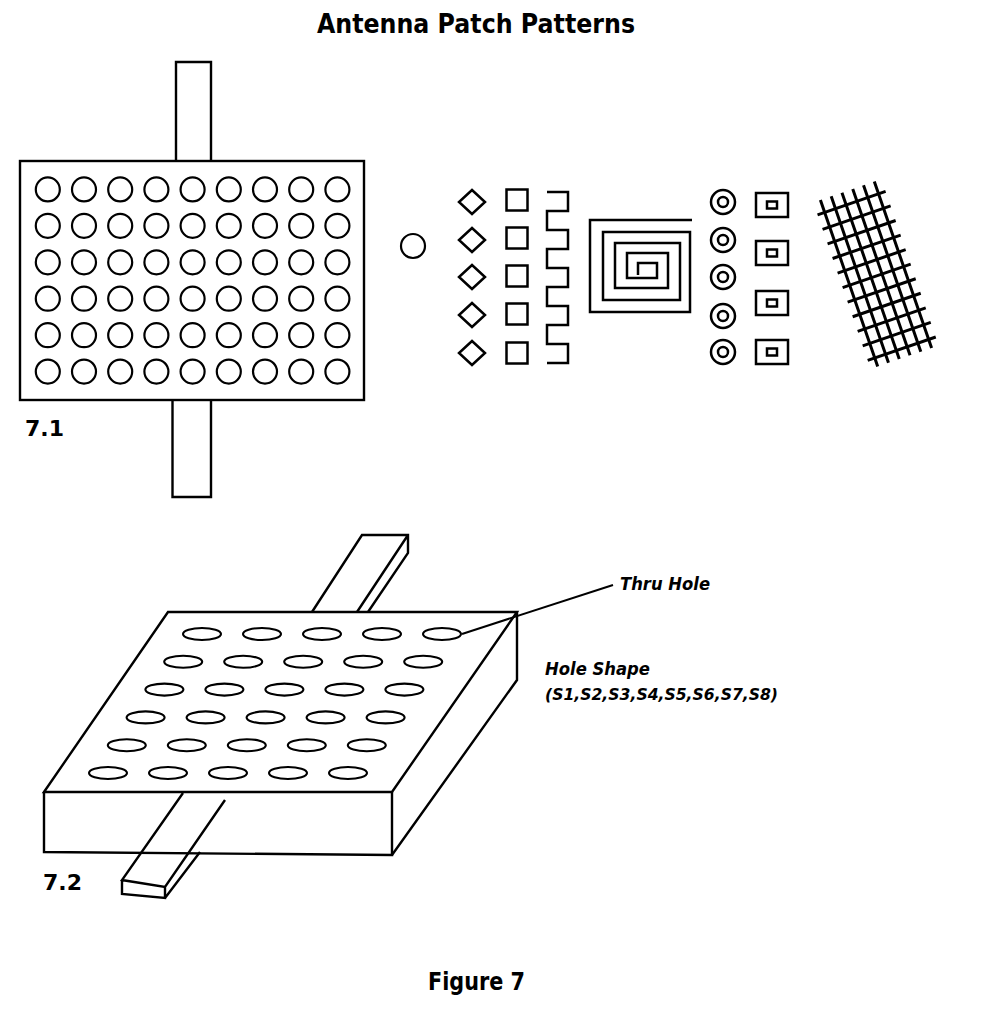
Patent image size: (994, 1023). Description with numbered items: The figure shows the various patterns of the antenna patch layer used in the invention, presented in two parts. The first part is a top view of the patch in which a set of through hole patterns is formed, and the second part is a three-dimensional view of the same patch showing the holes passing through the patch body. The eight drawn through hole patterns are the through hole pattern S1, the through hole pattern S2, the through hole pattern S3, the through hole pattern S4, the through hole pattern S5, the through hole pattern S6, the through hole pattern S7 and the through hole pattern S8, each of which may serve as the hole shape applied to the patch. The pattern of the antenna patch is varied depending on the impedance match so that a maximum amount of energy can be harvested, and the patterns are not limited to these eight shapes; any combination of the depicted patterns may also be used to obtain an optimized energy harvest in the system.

The through hole pattern S1 is at (351, 200).
The through hole pattern S2 is at (471, 292).
The through hole pattern S3 is at (516, 293).
The through hole pattern S4 is at (557, 293).
The through hole pattern S5 is at (641, 307).
The through hole pattern S6 is at (723, 292).
The through hole pattern S7 is at (772, 294).
The through hole pattern S8 is at (875, 287).